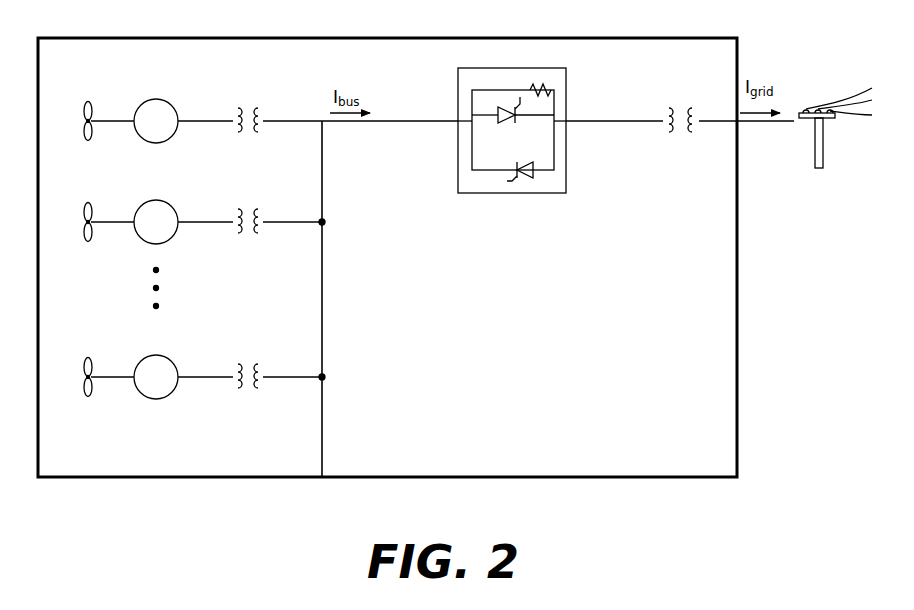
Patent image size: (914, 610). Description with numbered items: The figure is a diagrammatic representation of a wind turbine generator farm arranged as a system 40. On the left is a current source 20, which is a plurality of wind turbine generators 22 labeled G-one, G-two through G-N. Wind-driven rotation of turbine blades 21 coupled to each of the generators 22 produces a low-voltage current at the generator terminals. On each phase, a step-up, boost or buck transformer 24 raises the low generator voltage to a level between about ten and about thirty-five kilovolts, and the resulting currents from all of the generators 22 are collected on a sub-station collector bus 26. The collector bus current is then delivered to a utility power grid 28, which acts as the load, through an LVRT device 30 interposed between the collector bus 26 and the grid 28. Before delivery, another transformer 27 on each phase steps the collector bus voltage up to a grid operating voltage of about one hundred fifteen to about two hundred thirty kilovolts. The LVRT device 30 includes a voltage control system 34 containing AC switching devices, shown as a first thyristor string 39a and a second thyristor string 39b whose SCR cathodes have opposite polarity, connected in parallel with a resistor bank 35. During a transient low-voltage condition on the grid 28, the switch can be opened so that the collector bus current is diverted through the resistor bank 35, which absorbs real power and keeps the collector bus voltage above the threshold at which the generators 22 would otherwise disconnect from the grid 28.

The current source 20 is at (83, 487).
The turbine blades 21 is at (86, 110).
The wind turbine generators 22 is at (156, 99).
The step-up transformer 24 is at (252, 92).
The sub-station collector bus 26 is at (322, 449).
The step-up transformer 27 is at (678, 149).
The utility power grid 28 is at (801, 166).
The LVRT device 30 is at (551, 193).
The voltage control system 34 is at (445, 197).
The resistor bank 35 is at (549, 85).
The first thyristor string 39a is at (488, 116).
The second thyristor string 39b is at (490, 171).
The system 40 is at (637, 477).